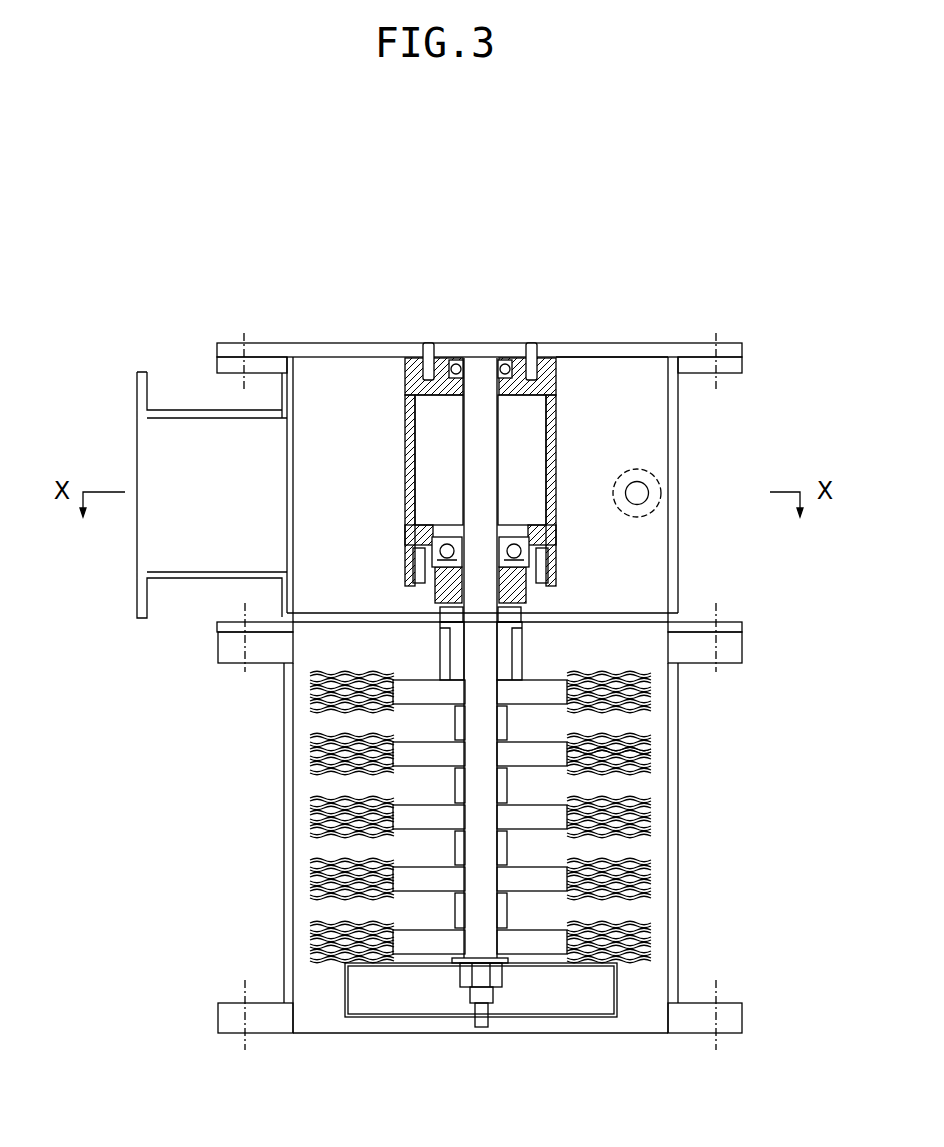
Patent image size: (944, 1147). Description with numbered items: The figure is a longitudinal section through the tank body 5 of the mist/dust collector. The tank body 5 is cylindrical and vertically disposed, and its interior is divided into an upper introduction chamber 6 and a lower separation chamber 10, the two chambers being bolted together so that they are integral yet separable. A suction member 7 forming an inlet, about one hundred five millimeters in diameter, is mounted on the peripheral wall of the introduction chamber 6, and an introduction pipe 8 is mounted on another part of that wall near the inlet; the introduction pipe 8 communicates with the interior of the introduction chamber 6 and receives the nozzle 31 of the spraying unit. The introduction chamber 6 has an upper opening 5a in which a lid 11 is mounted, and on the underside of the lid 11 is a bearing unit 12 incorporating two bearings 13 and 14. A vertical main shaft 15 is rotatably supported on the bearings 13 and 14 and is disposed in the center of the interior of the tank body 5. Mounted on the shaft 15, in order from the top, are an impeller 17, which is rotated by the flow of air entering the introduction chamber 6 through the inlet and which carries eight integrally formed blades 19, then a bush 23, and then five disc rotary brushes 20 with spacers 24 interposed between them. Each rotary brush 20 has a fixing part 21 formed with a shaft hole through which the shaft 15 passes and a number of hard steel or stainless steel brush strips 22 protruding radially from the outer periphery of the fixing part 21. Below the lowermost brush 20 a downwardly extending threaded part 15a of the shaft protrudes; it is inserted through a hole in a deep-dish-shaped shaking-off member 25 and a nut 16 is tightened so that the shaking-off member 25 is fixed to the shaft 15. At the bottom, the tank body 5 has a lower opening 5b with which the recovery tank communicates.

The tank body 5 is at (283, 722).
The upper opening 5a is at (588, 360).
The lower opening 5b is at (632, 1034).
The introduction chamber 6 is at (288, 360).
The suction member 7 is at (147, 445).
The introduction pipe 8 is at (657, 500).
The separation chamber 10 is at (305, 778).
The lid 11 is at (323, 348).
The bearing unit 12 is at (410, 358).
The bearing 13 is at (450, 362).
The bearing 14 is at (432, 542).
The main shaft 15 is at (470, 668).
The threaded part 15a is at (484, 1005).
The nut 16 is at (500, 985).
The impeller 17 is at (613, 362).
The blades 19 is at (665, 362).
The disc rotary brush 20 is at (655, 740).
The fixing part 21 is at (558, 762).
The brush strips 22 is at (653, 755).
The bush 23 is at (510, 665).
The spacer 24 is at (505, 852).
The shaking-off member 25 is at (368, 1005).
The nozzle 31 is at (646, 490).